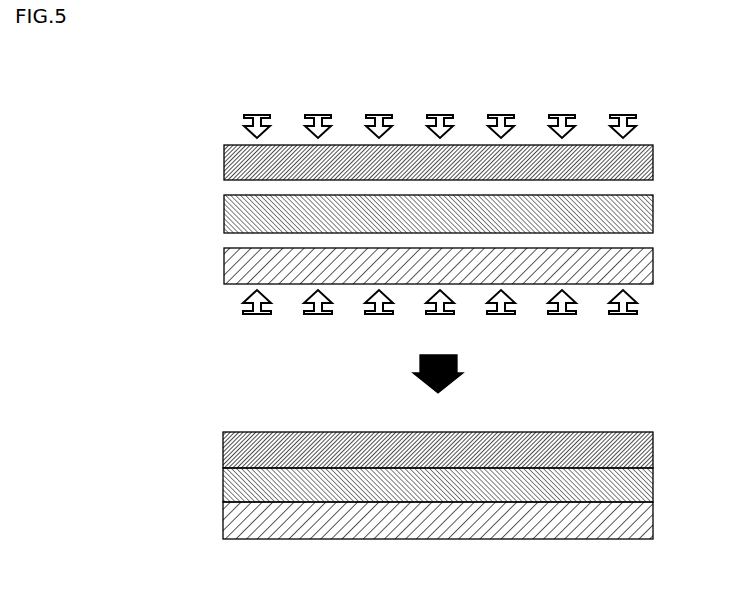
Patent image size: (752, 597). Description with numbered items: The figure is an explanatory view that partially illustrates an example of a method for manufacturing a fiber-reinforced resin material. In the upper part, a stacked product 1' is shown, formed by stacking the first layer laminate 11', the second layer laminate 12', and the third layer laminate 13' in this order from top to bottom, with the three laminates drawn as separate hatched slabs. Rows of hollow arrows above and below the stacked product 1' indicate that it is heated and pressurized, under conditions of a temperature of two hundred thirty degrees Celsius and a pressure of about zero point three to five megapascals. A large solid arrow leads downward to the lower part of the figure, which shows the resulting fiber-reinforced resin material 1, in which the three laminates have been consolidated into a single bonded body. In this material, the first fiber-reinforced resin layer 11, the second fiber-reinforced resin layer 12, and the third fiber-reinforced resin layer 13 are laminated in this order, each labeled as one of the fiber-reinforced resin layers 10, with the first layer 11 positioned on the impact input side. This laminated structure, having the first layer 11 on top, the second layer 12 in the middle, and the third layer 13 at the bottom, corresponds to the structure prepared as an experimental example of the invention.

The stacked product 1' is at (471, 191).
The first layer laminate 11' is at (460, 144).
The second layer laminate 12' is at (471, 197).
The third layer laminate 13' is at (465, 285).
The fiber-reinforced resin material 1 is at (208, 390).
The fiber-reinforced resin layers 10 is at (459, 469).
The first fiber-reinforced resin layer 11 is at (462, 429).
The second fiber-reinforced resin layer 12 is at (481, 472).
The third fiber-reinforced resin layer 13 is at (469, 542).